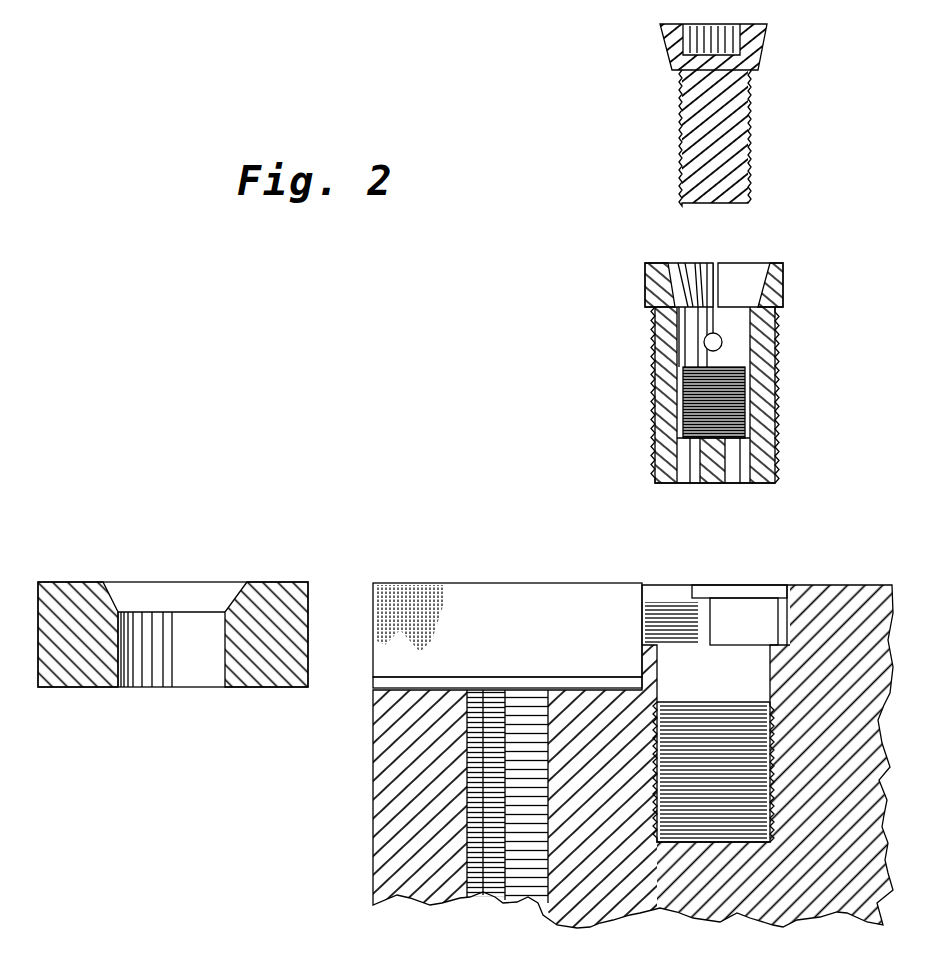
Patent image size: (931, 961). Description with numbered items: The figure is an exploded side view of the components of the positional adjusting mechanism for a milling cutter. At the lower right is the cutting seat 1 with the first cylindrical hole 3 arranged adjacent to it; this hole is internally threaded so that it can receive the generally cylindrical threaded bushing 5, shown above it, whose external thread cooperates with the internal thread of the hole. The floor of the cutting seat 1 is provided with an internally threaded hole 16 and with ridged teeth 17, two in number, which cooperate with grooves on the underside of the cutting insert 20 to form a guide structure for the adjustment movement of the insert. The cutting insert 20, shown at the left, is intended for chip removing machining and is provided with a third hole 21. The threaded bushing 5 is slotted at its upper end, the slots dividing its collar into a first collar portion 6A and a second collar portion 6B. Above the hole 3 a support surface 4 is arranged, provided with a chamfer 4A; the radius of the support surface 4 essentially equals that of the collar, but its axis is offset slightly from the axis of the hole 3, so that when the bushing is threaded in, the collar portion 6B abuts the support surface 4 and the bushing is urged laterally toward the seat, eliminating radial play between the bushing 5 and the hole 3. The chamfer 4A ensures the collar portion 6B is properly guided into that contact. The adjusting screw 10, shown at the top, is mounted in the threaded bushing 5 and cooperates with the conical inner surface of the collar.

The cutting seat 1 is at (582, 665).
The first cylindrical hole 3 is at (685, 718).
The support surface 4 is at (758, 617).
The chamfer 4A is at (722, 597).
The threaded bushing 5 is at (790, 398).
The first collar portion 6A is at (650, 282).
The second collar portion 6B is at (775, 283).
The adjusting screw 10 is at (772, 135).
The hole 16 is at (467, 798).
The ridged teeth 17 is at (380, 682).
The cutting insert 20 is at (287, 573).
The third hole 21 is at (183, 670).